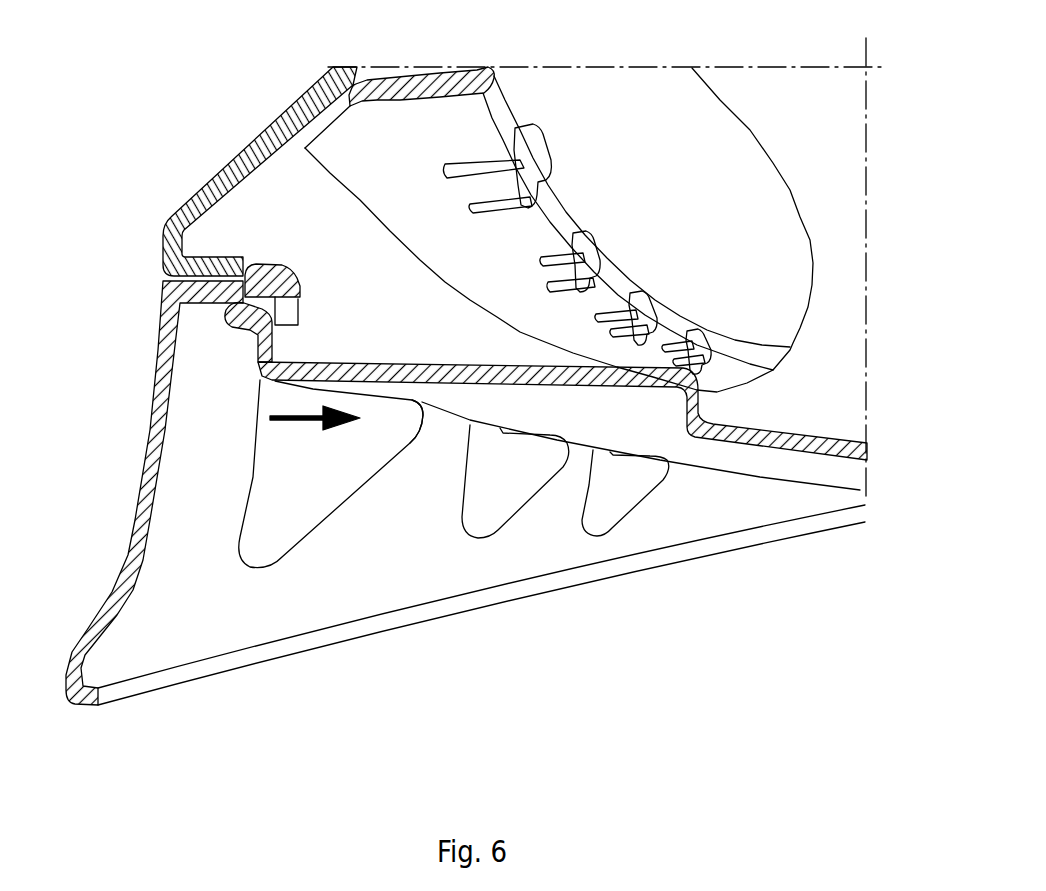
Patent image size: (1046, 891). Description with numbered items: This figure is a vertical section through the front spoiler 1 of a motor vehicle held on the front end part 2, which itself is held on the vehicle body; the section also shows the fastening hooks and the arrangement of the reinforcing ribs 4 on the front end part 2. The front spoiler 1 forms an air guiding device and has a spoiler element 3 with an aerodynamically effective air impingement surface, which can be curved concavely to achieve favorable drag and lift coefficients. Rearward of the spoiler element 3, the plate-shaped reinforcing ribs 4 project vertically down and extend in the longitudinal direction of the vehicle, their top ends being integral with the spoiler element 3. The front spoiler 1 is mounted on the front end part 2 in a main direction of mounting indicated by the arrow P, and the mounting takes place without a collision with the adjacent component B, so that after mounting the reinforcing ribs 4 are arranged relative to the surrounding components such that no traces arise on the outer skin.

The front spoiler 1 is at (137, 348).
The front end part 2 is at (790, 442).
The spoiler element 3 is at (137, 537).
The reinforcing ribs 4 is at (272, 535).
The arrow P is at (313, 416).
The adjacent component B is at (411, 408).